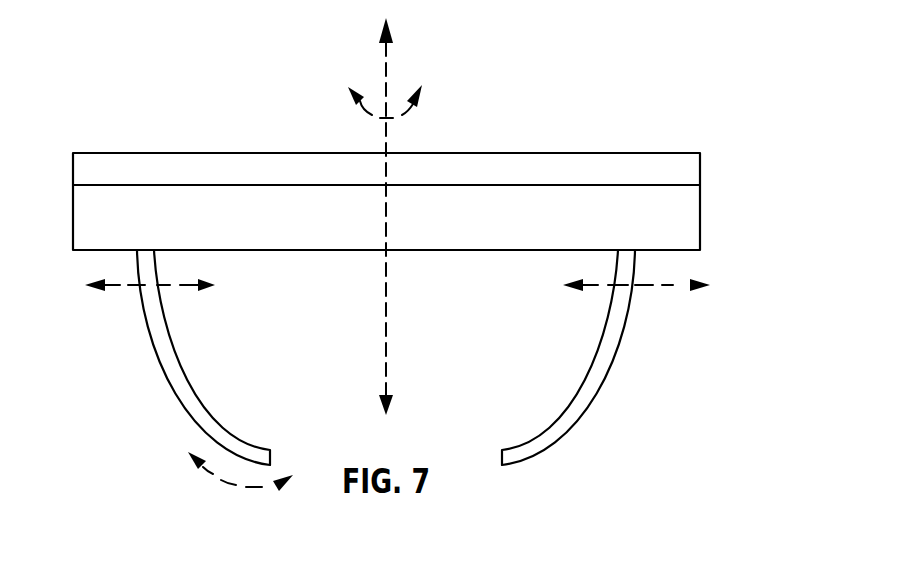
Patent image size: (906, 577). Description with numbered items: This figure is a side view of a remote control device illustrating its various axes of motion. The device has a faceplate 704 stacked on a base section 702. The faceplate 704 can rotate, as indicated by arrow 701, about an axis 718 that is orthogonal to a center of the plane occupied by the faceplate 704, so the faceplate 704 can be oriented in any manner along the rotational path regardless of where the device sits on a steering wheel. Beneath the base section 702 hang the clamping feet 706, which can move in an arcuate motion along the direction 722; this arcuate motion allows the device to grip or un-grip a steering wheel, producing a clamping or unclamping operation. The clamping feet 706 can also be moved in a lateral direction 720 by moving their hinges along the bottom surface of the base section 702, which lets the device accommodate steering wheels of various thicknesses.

The rotation arrow 701 is at (402, 116).
The base section 702 is at (700, 235).
The faceplate 704 is at (700, 170).
The clamping feet 706 is at (580, 418).
The axis 718 is at (388, 68).
The lateral direction 720 is at (667, 289).
The direction of arcuate motion 722 is at (228, 484).